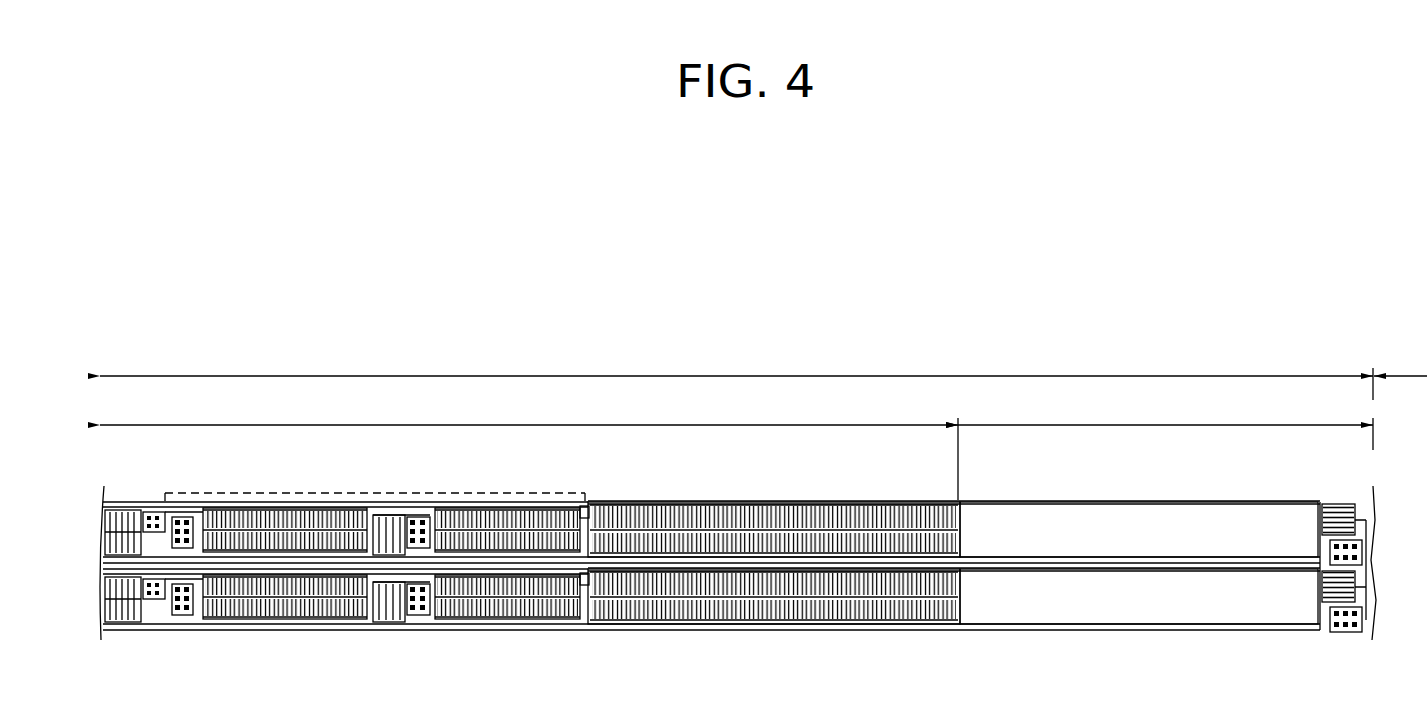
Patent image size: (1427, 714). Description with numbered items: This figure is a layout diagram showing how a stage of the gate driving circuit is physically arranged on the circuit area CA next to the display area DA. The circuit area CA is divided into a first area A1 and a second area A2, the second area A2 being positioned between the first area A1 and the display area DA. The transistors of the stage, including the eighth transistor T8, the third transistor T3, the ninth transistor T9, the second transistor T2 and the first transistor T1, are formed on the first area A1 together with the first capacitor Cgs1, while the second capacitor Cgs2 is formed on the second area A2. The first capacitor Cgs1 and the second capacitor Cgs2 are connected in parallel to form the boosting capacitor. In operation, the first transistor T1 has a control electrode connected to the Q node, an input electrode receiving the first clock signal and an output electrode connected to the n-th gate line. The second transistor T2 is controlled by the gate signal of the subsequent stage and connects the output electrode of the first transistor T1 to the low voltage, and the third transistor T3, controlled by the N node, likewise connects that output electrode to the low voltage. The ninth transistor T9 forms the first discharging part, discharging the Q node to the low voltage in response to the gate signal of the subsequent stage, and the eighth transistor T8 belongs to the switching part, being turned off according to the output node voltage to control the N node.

The eighth transistor T8 is at (117, 502).
The third transistor T3 is at (282, 515).
The first capacitor Cgs1 is at (372, 493).
The ninth transistor T9 is at (390, 515).
The second transistor T2 is at (497, 512).
The first transistor T1 is at (737, 530).
The second capacitor Cgs2 is at (1137, 527).
The circuit area CA is at (736, 372).
The first area A1 is at (529, 408).
The second area A2 is at (1165, 420).
The display area DA is at (1400, 360).